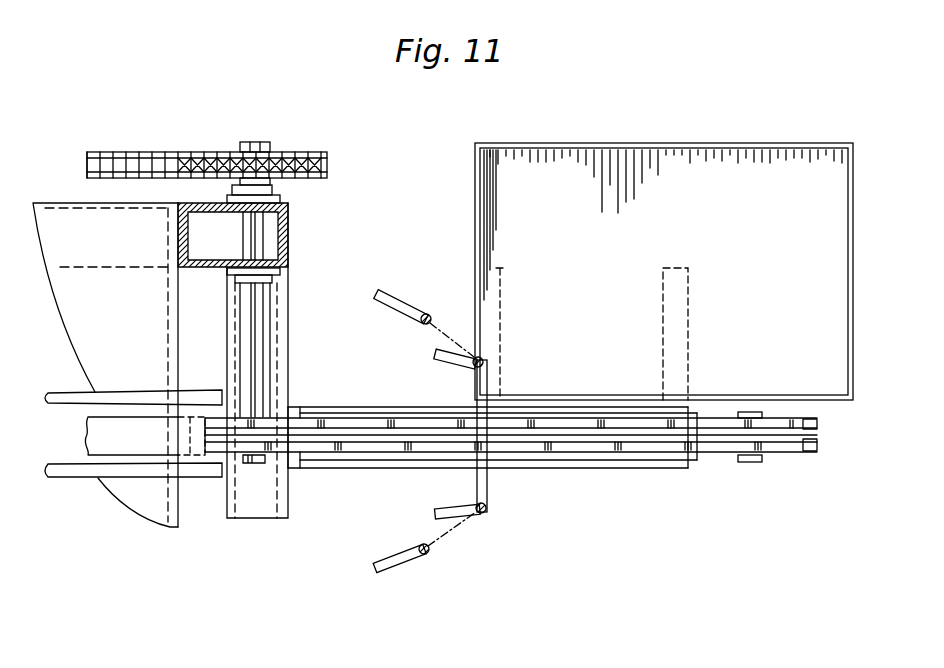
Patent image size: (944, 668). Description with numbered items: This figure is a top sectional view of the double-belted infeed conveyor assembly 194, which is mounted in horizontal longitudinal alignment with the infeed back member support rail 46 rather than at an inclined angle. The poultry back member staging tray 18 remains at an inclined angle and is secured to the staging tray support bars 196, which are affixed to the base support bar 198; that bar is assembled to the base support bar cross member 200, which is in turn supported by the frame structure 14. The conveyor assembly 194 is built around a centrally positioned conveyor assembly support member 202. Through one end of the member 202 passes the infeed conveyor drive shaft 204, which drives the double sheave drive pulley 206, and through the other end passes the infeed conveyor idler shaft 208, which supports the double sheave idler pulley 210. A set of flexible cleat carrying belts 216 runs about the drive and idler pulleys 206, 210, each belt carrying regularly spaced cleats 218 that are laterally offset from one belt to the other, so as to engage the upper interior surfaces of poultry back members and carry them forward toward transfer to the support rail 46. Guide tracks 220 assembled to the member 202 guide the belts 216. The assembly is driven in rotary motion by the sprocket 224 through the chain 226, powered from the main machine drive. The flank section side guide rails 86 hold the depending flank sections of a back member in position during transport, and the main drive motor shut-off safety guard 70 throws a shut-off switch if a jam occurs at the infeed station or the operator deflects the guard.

The frame structure 14 is at (190, 561).
The poultry back member staging tray 18 is at (637, 143).
The infeed back member support rail 46 is at (86, 441).
The main drive motor shut-off safety guard 70 is at (492, 388).
The flank section side guide rails 86 is at (131, 392).
The infeed conveyor assembly 194 is at (642, 549).
The poultry back member staging tray support bars 196 is at (500, 283).
The base support bar 198 is at (357, 406).
The base support bar cross member 200 is at (251, 519).
The conveyor assembly support member 202 is at (540, 436).
The infeed conveyor drive shaft 204 is at (263, 300).
The infeed conveyor belts double sheave drive pulley 206 is at (270, 408).
The infeed conveyor idler shaft 208 is at (755, 463).
The infeed conveyor belts double sheave idler pulley 210 is at (725, 452).
The flexible cleat carrying belts 216 is at (425, 460).
The cleats 218 is at (350, 418).
The guide tracks 220 is at (420, 381).
The sprocket 224 is at (246, 113).
The chain 226 is at (155, 152).